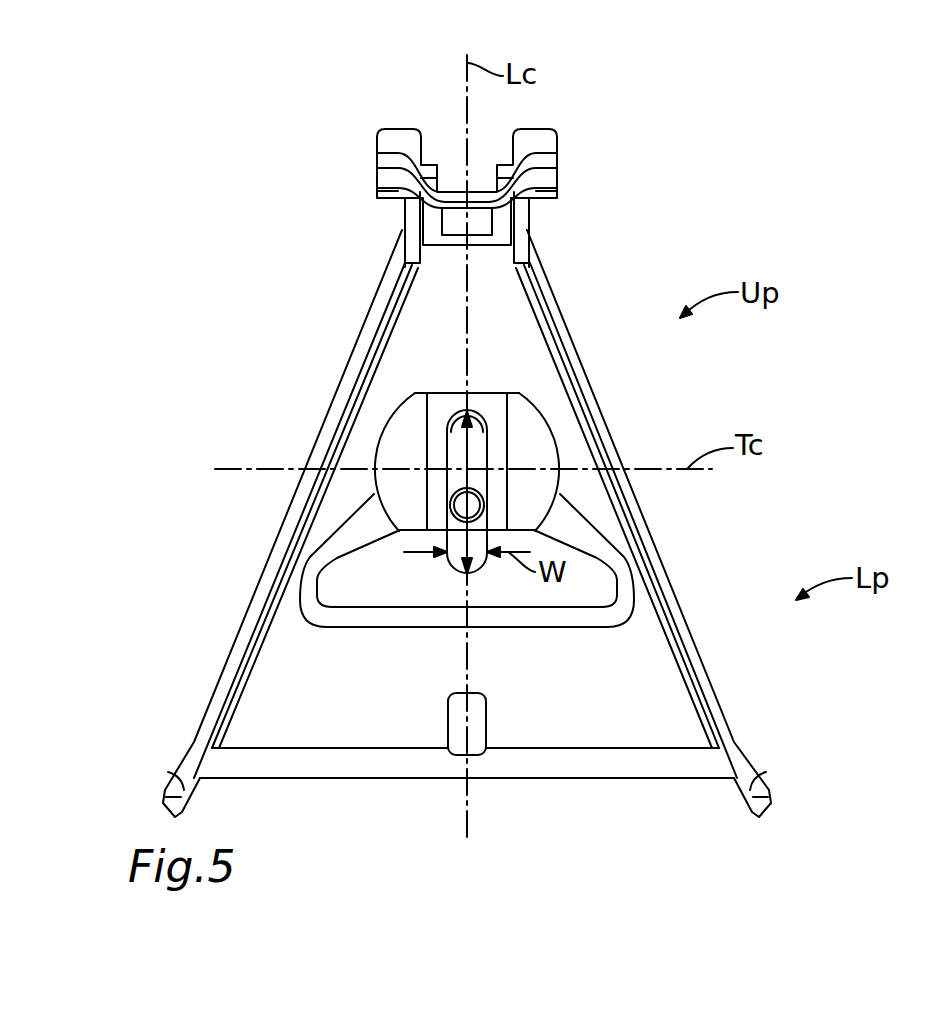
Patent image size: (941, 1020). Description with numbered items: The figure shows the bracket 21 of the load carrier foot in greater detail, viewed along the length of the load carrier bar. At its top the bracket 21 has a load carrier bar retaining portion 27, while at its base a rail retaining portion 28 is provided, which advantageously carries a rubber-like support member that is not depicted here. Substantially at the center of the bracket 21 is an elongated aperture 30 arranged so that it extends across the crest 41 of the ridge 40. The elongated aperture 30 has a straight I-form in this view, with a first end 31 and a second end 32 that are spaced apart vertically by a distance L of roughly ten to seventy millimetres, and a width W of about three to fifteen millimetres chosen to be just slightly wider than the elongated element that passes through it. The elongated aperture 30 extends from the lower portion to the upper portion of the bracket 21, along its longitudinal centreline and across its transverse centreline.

The bracket 21 is at (710, 658).
The load carrier bar retaining portion 27 is at (540, 176).
The rail retaining portion 28 is at (748, 760).
The elongated aperture 30 is at (507, 447).
The first end 31 is at (461, 412).
The second end 32 is at (453, 580).
The ridge 40 is at (400, 500).
The crest 41 is at (433, 466).